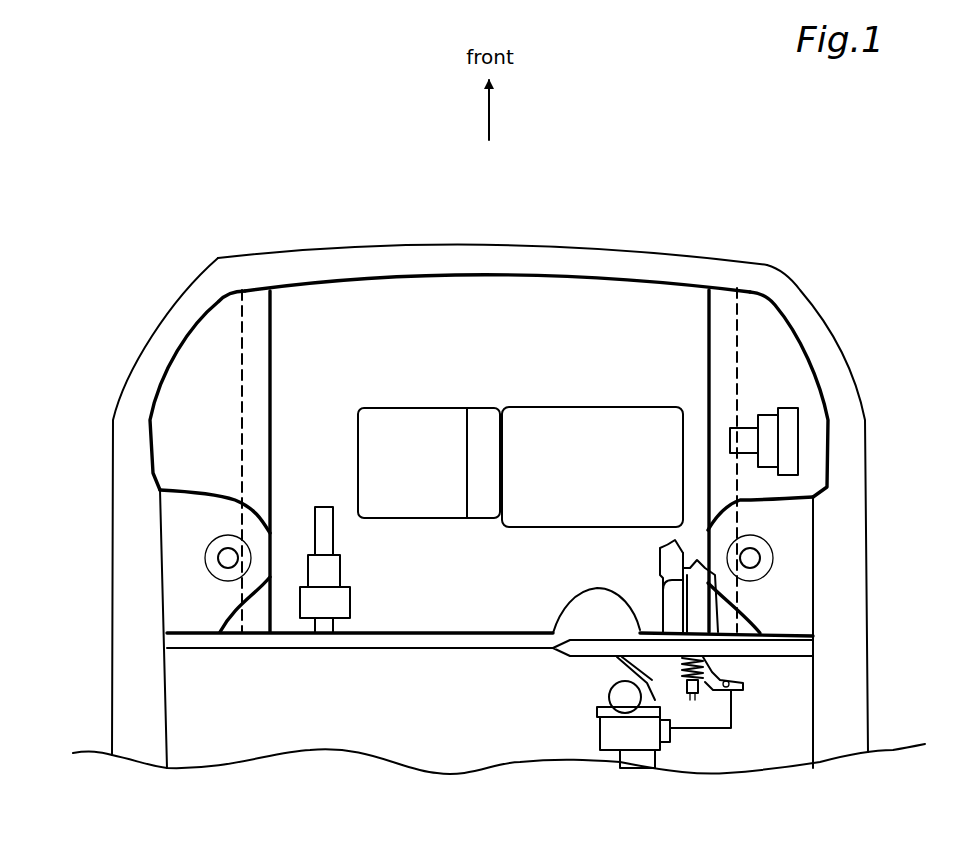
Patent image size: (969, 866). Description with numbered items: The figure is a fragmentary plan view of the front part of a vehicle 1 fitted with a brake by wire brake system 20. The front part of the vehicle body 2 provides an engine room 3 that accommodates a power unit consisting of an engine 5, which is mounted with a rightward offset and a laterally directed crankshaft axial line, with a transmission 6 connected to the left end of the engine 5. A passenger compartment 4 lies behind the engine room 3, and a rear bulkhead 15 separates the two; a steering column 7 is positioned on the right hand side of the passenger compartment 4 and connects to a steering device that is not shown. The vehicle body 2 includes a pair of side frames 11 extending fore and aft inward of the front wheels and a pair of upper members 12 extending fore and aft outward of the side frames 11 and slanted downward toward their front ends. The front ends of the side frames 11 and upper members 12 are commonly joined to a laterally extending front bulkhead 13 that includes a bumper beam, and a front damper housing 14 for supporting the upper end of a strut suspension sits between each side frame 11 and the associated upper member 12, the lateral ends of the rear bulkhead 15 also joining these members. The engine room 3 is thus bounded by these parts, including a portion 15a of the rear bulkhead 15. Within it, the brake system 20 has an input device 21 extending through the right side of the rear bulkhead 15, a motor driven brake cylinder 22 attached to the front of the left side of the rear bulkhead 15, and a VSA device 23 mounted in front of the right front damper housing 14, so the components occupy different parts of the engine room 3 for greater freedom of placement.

The vehicle 1 is at (603, 170).
The vehicle body 2 is at (383, 241).
The engine room 3 is at (478, 342).
The passenger compartment 4 is at (478, 732).
The engine 5 is at (581, 415).
The transmission 6 is at (418, 420).
The steering column 7 is at (660, 762).
The side frame 11 is at (242, 335).
The upper member 12 is at (117, 487).
The front bulkhead 13 is at (497, 247).
The front damper housing 14 is at (185, 550).
The rear bulkhead 15 is at (373, 650).
The floor bulge 15a is at (582, 607).
The brake system 20 is at (528, 554).
The input device 21 is at (673, 597).
The motor driven brake cylinder 22 is at (340, 567).
The VSA device 23 is at (768, 415).